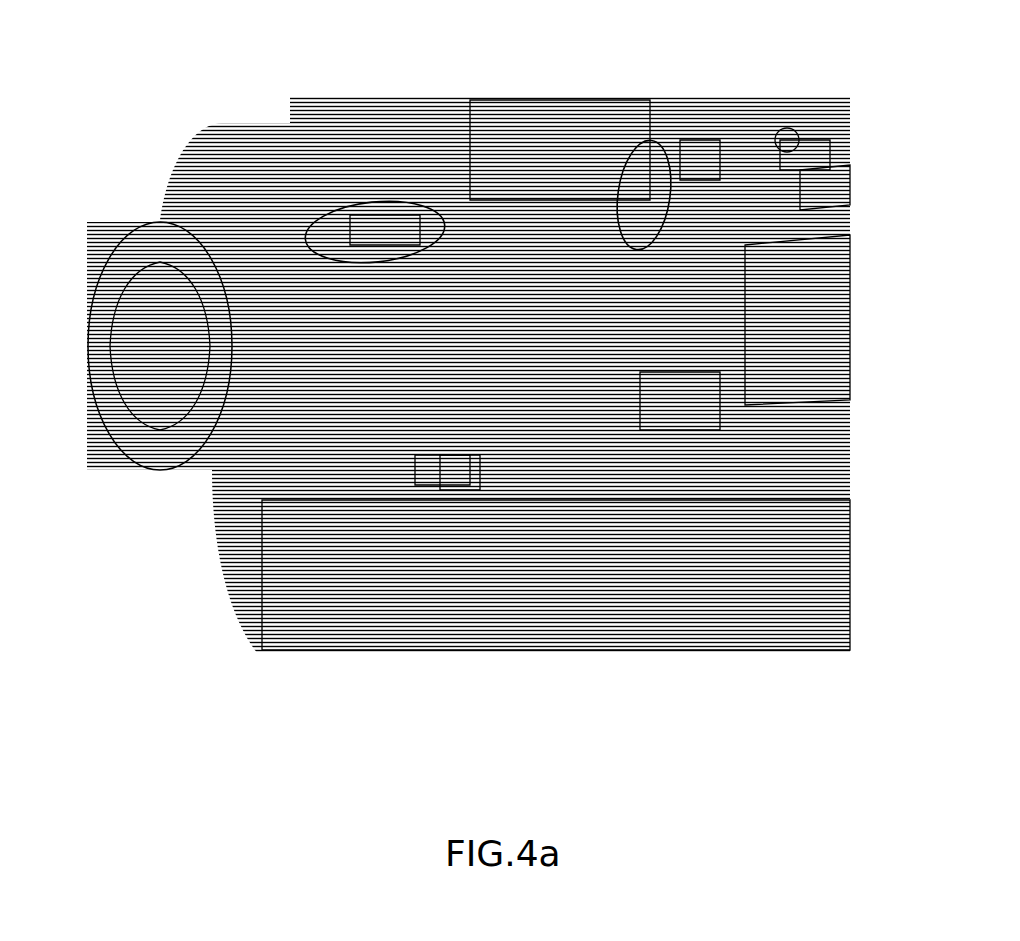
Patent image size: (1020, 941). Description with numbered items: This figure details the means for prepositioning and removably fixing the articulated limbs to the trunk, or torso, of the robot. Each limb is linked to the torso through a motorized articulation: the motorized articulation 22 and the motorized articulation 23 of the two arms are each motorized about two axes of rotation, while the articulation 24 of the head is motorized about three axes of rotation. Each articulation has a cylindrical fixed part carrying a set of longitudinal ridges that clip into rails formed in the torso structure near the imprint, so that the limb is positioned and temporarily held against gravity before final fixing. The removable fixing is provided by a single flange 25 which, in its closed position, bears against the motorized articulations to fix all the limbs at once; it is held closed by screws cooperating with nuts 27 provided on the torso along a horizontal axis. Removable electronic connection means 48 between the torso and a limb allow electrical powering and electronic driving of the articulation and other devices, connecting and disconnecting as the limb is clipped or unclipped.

The motorized articulation 22 is at (98, 363).
The motorized articulation 23 is at (842, 333).
The articulation 24 is at (547, 137).
The flange 25 is at (777, 630).
The nuts 27 is at (787, 135).
The removable electronic connection means 48 is at (655, 427).